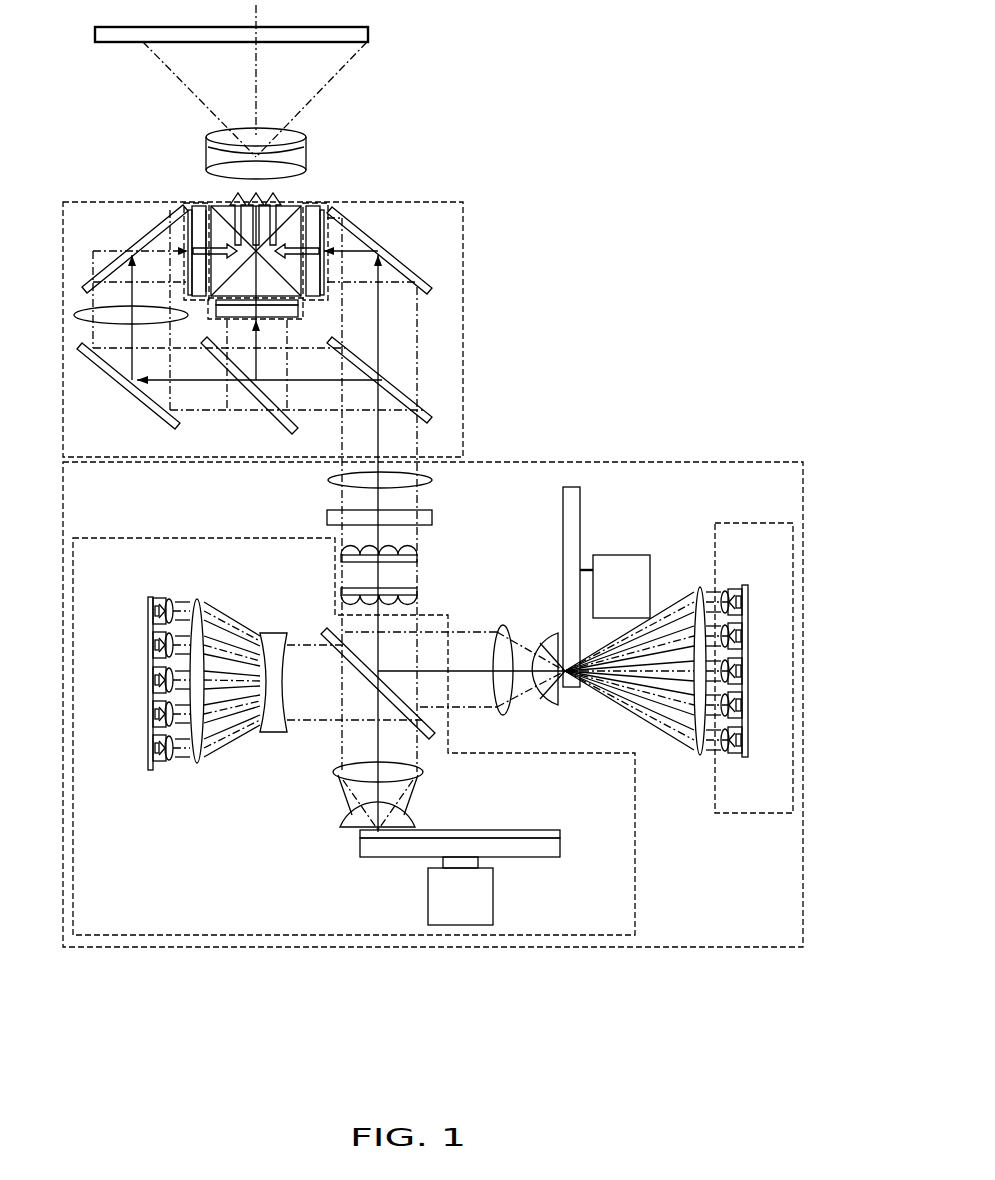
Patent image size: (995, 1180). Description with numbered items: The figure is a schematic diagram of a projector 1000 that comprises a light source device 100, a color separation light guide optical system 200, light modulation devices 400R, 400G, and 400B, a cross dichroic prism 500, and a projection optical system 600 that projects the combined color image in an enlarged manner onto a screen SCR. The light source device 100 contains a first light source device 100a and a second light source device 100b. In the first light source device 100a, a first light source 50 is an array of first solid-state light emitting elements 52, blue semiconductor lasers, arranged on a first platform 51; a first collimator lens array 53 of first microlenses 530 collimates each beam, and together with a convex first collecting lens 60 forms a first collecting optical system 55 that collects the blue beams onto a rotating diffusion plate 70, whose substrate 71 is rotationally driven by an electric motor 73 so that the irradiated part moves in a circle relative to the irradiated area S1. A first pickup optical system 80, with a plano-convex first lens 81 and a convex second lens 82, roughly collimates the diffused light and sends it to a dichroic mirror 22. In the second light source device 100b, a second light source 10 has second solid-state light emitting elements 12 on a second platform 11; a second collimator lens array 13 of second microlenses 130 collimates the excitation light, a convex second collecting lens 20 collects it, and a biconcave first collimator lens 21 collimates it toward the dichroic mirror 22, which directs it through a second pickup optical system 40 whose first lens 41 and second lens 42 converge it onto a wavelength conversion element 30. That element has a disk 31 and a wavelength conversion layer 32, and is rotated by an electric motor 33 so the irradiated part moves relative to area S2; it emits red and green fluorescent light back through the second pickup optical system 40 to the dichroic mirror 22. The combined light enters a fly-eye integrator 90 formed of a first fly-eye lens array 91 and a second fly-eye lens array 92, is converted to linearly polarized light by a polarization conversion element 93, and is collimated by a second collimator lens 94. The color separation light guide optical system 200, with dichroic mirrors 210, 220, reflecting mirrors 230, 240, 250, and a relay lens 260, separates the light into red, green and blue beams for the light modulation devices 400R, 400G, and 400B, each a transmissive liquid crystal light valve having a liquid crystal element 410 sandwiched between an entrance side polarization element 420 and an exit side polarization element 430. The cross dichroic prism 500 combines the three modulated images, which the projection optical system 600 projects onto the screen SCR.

The projector 1000 is at (576, 38).
The screen SCR is at (366, 43).
The projection optical system 600 is at (307, 160).
The cross dichroic prism 500 is at (217, 202).
The light modulation device 400R is at (123, 198).
The entrance side polarization element 420 is at (189, 207).
The liquid crystal element 410 is at (198, 206).
The exit side polarization element 430 is at (171, 212).
The light modulation device 400B is at (316, 206).
The light modulation device 400G is at (215, 308).
The color separation light guide optical system 200 is at (463, 229).
The dichroic mirror 210 is at (426, 408).
The dichroic mirror 220 is at (289, 426).
The reflecting mirror 230 is at (403, 262).
The reflecting mirror 240 is at (146, 408).
The reflecting mirror 250 is at (112, 261).
The relay lens 260 is at (76, 310).
The light source device 100 is at (606, 462).
The first light source device 100a is at (726, 813).
The second light source device 100b is at (166, 538).
The second collimator lens 94 is at (328, 480).
The polarization conversion element 93 is at (327, 517).
The fly-eye integrator 90 is at (415, 567).
The second fly-eye lens array 92 is at (417, 556).
The first fly-eye lens array 91 is at (397, 586).
The rotating diffusion plate 70 is at (586, 578).
The substrate 71 is at (581, 502).
The electric motor 73 is at (618, 555).
The first pickup optical system 80 is at (455, 636).
The first lens 81 is at (551, 642).
The second lens 82 is at (505, 626).
The first collecting optical system 55 is at (708, 622).
The first collecting lens 60 is at (694, 578).
The first collimator lens array 53 is at (725, 638).
The first microlens 530 is at (727, 628).
The first light source 50 is at (737, 701).
The first platform 51 is at (718, 758).
The first solid-state light emitting element 52 is at (748, 605).
The area irradiated with the blue light beams S1 is at (566, 676).
The second light source 10 is at (154, 686).
The second platform 11 is at (176, 780).
The second solid-state light emitting element 12 is at (152, 620).
The second collimator lens array 13 is at (220, 671).
The second microlens 130 is at (172, 642).
The second collecting lens 20 is at (203, 760).
The first collimator lens 21 is at (275, 633).
The dichroic mirror 22 is at (330, 630).
The second pickup optical system 40 is at (423, 796).
The first lens 41 is at (472, 766).
The second lens 42 is at (425, 774).
The area irradiated with the excitation light beams S2 is at (376, 836).
The wavelength conversion element 30 is at (491, 858).
The disk 31 is at (543, 857).
The wavelength conversion layer 32 is at (543, 830).
The electric motor 33 is at (494, 895).